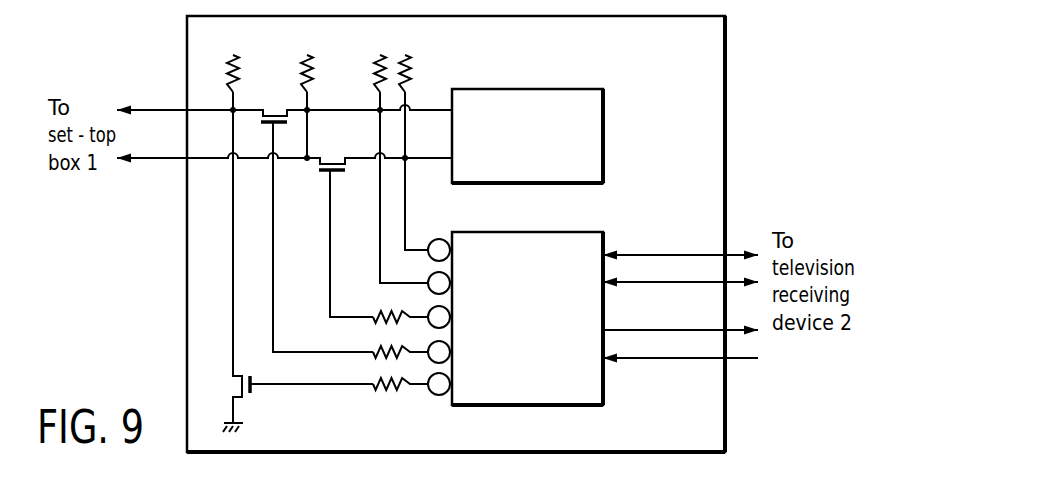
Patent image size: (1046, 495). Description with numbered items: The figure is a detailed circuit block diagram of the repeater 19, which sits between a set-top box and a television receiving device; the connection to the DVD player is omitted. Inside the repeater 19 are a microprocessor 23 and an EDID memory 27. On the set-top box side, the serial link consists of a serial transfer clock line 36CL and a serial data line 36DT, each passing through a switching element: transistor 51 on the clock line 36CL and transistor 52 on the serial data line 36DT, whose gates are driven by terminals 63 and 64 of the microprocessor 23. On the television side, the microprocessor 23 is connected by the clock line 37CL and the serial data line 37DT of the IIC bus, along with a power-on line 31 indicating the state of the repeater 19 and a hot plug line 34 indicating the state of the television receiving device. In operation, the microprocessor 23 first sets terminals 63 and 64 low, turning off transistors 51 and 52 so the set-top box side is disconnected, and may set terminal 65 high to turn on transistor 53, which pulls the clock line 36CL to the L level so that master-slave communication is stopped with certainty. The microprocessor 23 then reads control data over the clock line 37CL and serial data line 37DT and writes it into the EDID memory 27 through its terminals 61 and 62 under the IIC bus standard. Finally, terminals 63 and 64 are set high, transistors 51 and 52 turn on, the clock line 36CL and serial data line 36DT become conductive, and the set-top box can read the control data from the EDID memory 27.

The repeater 19 is at (725, 48).
The microprocessor 23 is at (540, 406).
The EDID memory 27 is at (603, 133).
The power-on line 31 is at (640, 329).
The hot plug line 34 is at (643, 360).
The serial transfer clock line 36CL is at (160, 107).
The serial data line 36DT is at (162, 162).
The clock line 37CL is at (640, 254).
The serial data line 37DT is at (667, 284).
The transistor 51 is at (275, 106).
The transistor 52 is at (325, 180).
The transistor 53 is at (246, 374).
The terminal 61 is at (432, 242).
The terminal 62 is at (428, 280).
The terminal 63 is at (428, 313).
The terminal 64 is at (428, 347).
The terminal 65 is at (428, 392).